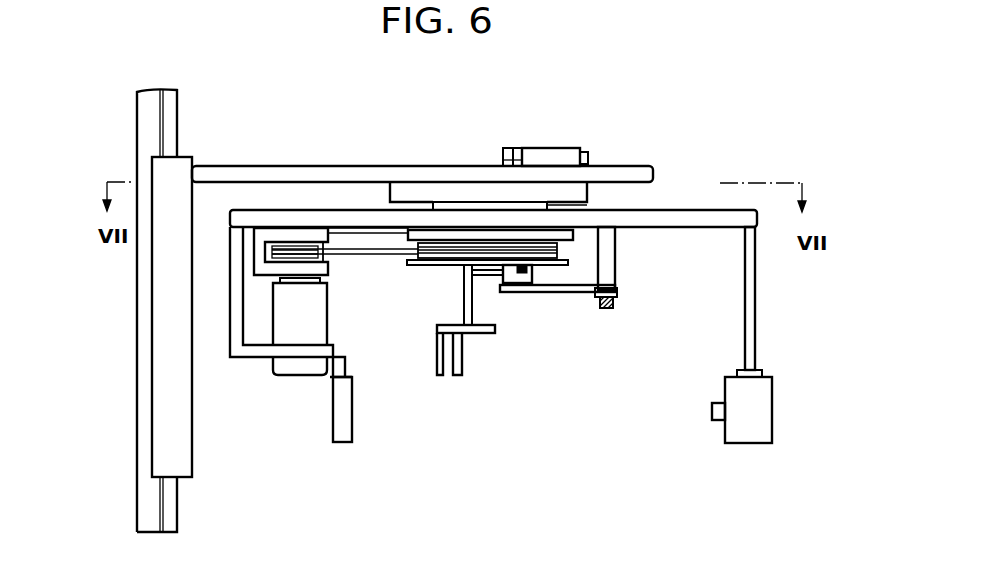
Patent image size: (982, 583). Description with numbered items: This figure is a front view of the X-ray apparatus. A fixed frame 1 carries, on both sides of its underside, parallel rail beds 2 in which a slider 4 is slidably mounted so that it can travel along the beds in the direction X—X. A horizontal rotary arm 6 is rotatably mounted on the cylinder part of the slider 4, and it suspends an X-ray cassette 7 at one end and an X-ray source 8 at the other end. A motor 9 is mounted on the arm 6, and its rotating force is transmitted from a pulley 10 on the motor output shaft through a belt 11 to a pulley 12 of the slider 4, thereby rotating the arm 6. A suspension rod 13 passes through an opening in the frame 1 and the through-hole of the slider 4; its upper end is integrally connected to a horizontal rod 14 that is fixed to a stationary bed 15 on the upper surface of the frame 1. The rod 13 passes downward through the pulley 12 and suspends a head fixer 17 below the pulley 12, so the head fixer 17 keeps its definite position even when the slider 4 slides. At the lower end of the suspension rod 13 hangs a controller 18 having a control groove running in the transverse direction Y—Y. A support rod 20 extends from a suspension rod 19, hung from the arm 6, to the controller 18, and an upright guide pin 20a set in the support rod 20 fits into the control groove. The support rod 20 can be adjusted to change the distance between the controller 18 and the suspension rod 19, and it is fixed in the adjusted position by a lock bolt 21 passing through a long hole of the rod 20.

The fixed frame 1 is at (338, 166).
The rail beds 2 is at (465, 182).
The slider 4 is at (440, 202).
The horizontal rotary arm 6 is at (670, 218).
The X-ray cassette 7 is at (340, 412).
The X-ray source 8 is at (763, 427).
The motor 9 is at (277, 287).
The pulley 10 is at (283, 243).
The belt 11 is at (355, 254).
The pulley 12 is at (432, 260).
The suspension rod 13 is at (503, 165).
The horizontal rod 14 is at (512, 148).
The stationary bed 15 is at (562, 153).
The head fixer 17 is at (437, 330).
The controller 18 is at (508, 290).
The suspension rod 19 is at (617, 265).
The support rod 20 is at (577, 292).
The guide pin 20a is at (535, 275).
The lock bolt 21 is at (612, 307).